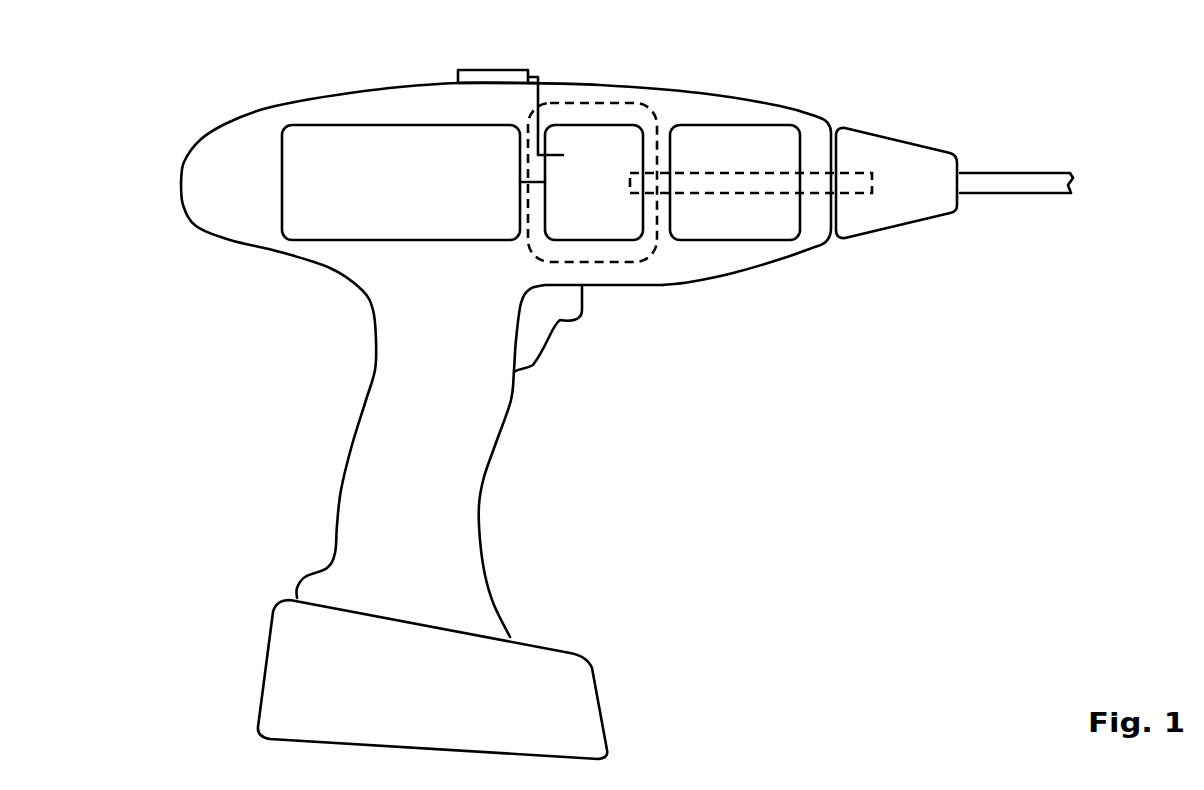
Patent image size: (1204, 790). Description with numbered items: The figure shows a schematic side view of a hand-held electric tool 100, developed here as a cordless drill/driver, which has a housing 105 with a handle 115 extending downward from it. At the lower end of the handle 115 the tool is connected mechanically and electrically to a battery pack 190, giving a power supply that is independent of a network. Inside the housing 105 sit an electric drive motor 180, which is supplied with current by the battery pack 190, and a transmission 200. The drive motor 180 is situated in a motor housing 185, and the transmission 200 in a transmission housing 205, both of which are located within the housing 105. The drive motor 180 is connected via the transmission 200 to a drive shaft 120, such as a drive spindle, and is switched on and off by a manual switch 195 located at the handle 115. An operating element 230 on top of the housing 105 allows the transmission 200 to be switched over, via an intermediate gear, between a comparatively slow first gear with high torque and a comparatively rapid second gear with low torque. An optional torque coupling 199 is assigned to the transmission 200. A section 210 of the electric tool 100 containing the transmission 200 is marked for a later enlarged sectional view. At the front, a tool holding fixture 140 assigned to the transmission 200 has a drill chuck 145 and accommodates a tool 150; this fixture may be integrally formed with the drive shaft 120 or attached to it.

The hand-held electric tool 100 is at (965, 83).
The housing 105 is at (207, 182).
The handle 115 is at (373, 450).
The drive shaft 120 is at (662, 183).
The tool holding fixture 140 is at (900, 198).
The drill chuck 145 is at (915, 142).
The tool 150 is at (1020, 182).
The electric drive motor 180 is at (373, 168).
The motor housing 185 is at (328, 125).
The battery pack 190 is at (288, 660).
The manual switch 195 is at (547, 308).
The torque coupling 199 is at (733, 147).
The transmission 200 is at (593, 145).
The transmission housing 205 is at (623, 240).
The section 210 is at (600, 262).
The operating element 230 is at (493, 70).